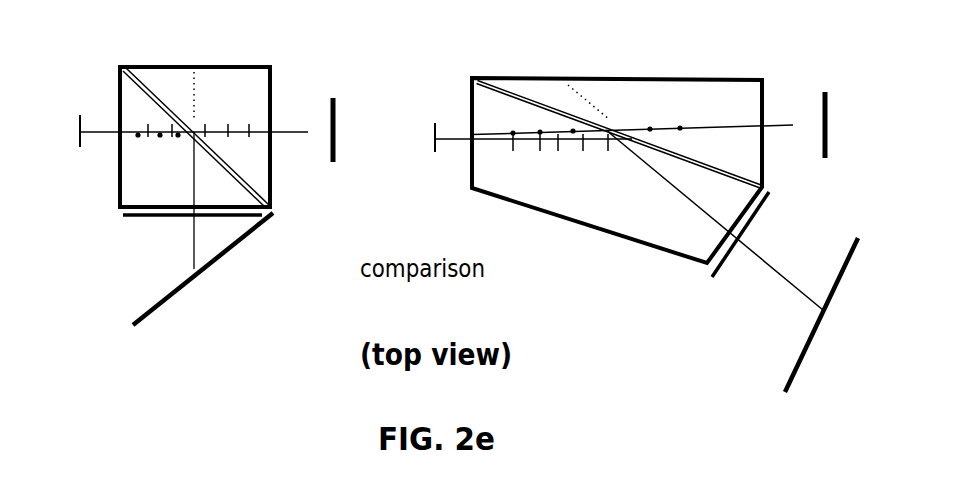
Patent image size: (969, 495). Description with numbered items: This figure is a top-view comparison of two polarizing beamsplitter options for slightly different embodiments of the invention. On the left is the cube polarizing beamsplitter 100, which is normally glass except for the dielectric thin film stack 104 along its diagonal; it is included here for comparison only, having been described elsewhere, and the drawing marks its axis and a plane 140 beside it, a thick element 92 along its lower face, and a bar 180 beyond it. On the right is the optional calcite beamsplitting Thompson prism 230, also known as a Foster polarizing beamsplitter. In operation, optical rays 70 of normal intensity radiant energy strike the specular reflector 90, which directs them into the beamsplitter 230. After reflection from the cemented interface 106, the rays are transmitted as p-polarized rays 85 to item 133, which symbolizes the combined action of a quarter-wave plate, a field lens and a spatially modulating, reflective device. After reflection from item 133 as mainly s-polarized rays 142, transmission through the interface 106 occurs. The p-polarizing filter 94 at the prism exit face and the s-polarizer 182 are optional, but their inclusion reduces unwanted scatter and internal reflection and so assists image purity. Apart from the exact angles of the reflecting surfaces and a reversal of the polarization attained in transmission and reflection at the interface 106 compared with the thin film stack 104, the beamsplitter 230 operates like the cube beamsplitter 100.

The cube polarizing beamsplitter 100 is at (195, 116).
The dielectric thin film stack 104 is at (151, 92).
The item symbolizing quarter wave plate, field lens and spatially modulating reflect 133 is at (78, 132).
The intermediate image plane 140 is at (194, 118).
The p-polarized rays 85 is at (464, 151).
The eye / exit pupil 180 is at (331, 117).
The reflective surface 92 is at (190, 229).
The optical rays 70 is at (194, 269).
The specular reflector 90 is at (498, 302).
The beamsplitting Thompson prism 230 is at (617, 149).
The cemented interface 106 is at (530, 98).
The s-polarized rays 142 is at (562, 126).
The s-polarizer 182 is at (827, 114).
The p-polarizing filter 94 is at (754, 234).